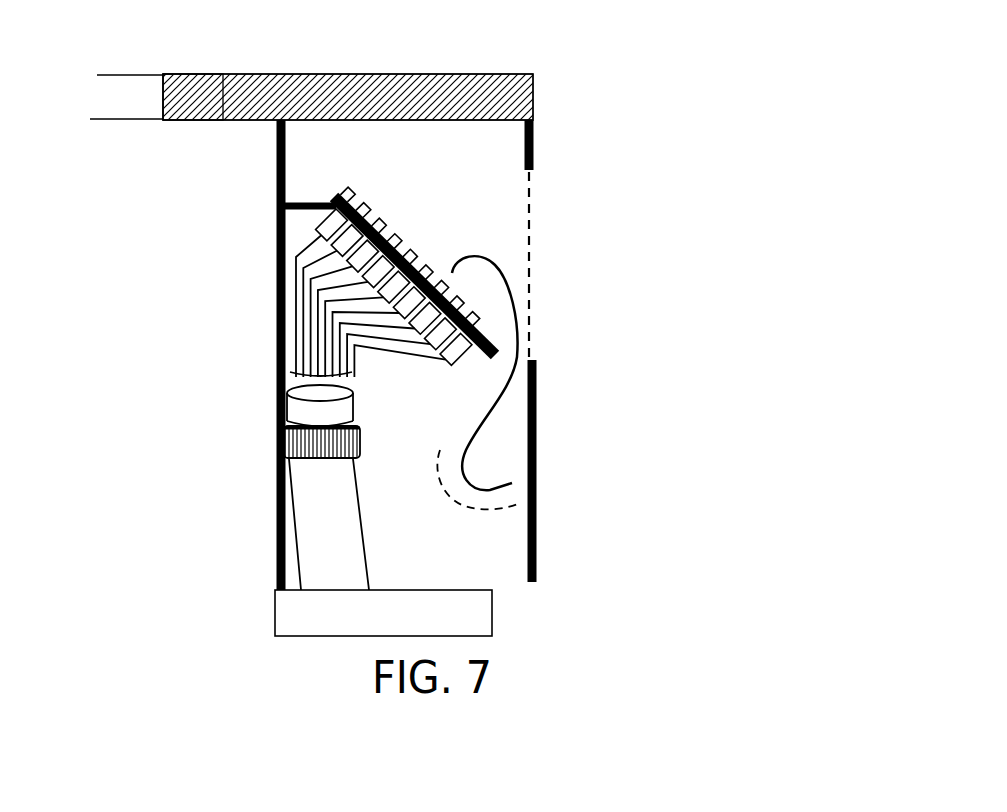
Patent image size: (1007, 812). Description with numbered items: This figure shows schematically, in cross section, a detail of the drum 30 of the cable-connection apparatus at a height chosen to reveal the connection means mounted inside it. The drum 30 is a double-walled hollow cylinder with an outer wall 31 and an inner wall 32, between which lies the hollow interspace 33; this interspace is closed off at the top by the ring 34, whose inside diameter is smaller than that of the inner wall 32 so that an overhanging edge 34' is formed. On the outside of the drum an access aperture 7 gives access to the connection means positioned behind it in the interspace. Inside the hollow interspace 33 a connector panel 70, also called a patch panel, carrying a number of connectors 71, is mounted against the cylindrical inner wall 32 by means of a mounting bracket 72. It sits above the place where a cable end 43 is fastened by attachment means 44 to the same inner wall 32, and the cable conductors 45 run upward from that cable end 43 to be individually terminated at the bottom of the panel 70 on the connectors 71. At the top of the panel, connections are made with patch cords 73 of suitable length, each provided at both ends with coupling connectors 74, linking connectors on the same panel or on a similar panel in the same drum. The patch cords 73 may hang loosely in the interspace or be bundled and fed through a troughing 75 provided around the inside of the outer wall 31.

The access aperture 7 is at (531, 296).
The drum 30 is at (540, 93).
The outer wall 31 is at (537, 394).
The inner wall 32 is at (277, 159).
The hollow interspace 33 is at (405, 491).
The ring 34 is at (311, 60).
The overhanging edge 34' is at (193, 60).
The cable end 43 is at (330, 557).
The attachment means 44 is at (284, 441).
The cable conductors 45 is at (293, 366).
The connector panel 70 is at (335, 200).
The connectors 71 is at (393, 236).
The mounting bracket 72 is at (303, 203).
The patch cord 73 is at (517, 333).
The coupling connectors 74 is at (452, 270).
The troughing 75 is at (477, 513).